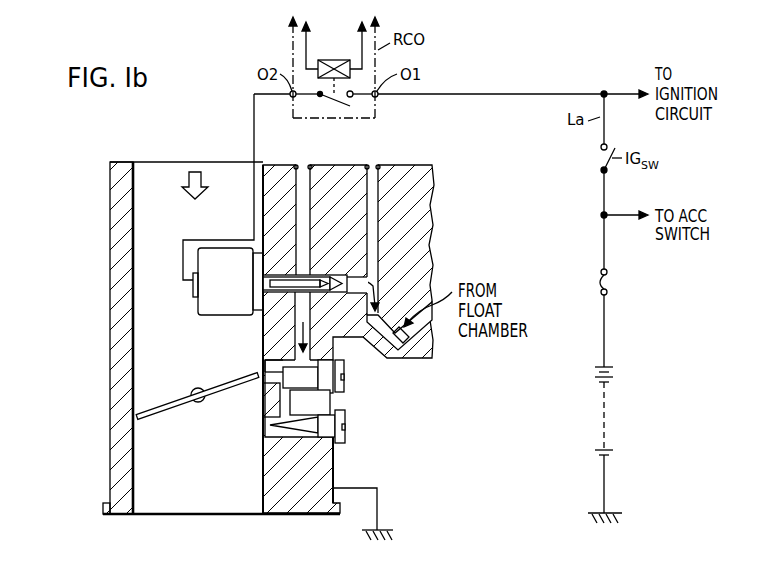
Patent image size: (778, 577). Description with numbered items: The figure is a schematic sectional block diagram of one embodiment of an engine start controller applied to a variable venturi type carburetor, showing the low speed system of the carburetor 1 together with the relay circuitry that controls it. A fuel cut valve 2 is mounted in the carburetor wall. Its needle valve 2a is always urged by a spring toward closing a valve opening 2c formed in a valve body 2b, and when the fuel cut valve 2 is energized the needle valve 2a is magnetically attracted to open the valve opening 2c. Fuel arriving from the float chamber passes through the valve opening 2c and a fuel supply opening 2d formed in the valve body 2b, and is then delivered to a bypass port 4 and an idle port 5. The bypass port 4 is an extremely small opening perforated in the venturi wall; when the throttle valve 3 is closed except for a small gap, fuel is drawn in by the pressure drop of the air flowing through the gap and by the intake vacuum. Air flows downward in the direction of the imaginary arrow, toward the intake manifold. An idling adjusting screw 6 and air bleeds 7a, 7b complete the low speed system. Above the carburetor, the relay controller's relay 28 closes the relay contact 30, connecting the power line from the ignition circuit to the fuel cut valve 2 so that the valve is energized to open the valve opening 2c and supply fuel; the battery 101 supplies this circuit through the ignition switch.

The low speed system of the carburetor 1 is at (108, 260).
The fuel cut valve 2 is at (235, 284).
The needle valve 2a is at (258, 290).
The valve body 2b is at (268, 302).
The valve opening 2c is at (389, 330).
The fuel supply opening 2d is at (268, 343).
The throttle valve 3 is at (166, 408).
The bypass port 4 is at (263, 381).
The idle port 5 is at (265, 425).
The idling adjusting screw 6 is at (346, 437).
The air bleed 7a is at (300, 164).
The air bleed 7b is at (376, 164).
The relay 28 is at (347, 59).
The relay contact 30 is at (333, 103).
The battery 101 is at (609, 393).